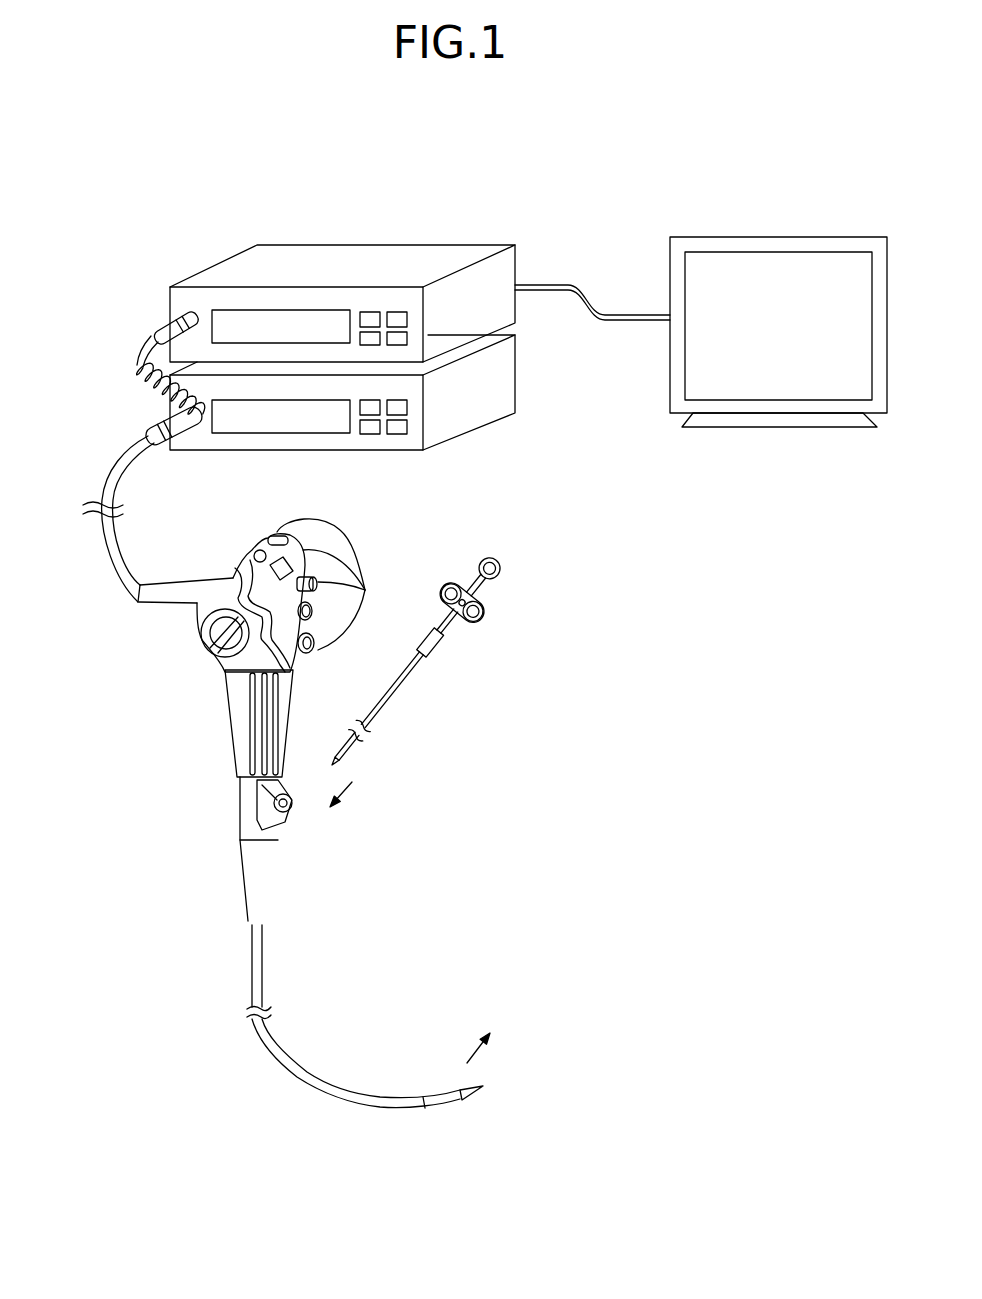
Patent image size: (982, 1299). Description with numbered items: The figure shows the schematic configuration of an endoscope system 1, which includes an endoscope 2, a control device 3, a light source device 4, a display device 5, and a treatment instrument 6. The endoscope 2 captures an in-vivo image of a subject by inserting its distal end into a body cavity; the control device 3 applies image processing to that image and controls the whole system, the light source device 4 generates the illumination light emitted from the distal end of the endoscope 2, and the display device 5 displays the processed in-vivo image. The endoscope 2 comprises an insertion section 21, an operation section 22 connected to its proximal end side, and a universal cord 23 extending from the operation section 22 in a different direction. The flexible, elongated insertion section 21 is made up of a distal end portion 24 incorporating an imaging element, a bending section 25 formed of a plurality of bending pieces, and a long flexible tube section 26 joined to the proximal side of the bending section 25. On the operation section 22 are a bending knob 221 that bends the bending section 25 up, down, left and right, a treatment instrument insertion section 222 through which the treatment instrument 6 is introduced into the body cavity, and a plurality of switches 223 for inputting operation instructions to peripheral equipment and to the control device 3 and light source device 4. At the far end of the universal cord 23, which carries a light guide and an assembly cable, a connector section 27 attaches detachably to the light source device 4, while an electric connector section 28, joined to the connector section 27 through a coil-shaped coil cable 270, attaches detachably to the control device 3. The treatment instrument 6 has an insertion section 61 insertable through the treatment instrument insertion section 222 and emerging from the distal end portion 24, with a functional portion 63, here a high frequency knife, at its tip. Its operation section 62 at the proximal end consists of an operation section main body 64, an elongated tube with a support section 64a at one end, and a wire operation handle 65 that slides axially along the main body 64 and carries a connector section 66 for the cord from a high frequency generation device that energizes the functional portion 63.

The endoscope system 1 is at (579, 157).
The endoscope 2 is at (372, 552).
The control device 3 is at (483, 245).
The light source device 4 is at (504, 374).
The display device 5 is at (779, 242).
The treatment instrument 6 is at (530, 698).
The insertion section 21 is at (330, 1065).
The operation section 22 is at (265, 538).
The universal cord 23 is at (100, 540).
The distal end portion 24 is at (467, 1102).
The bending section 25 is at (440, 1093).
The flexible tube section 26 is at (305, 1088).
The connector section 27 is at (172, 443).
The electric connector section 28 is at (187, 323).
The insertion section 61 is at (395, 704).
The operation section 62 is at (499, 555).
The functional portion 63 is at (338, 763).
The operation section main body 64 is at (447, 628).
The support section 64a is at (502, 571).
The wire operation handle 65 is at (483, 622).
The connector section 66 is at (472, 583).
The bending knob 221 is at (208, 650).
The treatment instrument insertion section 222 is at (292, 820).
The switches 223 is at (346, 584).
The coil cable 270 is at (137, 375).